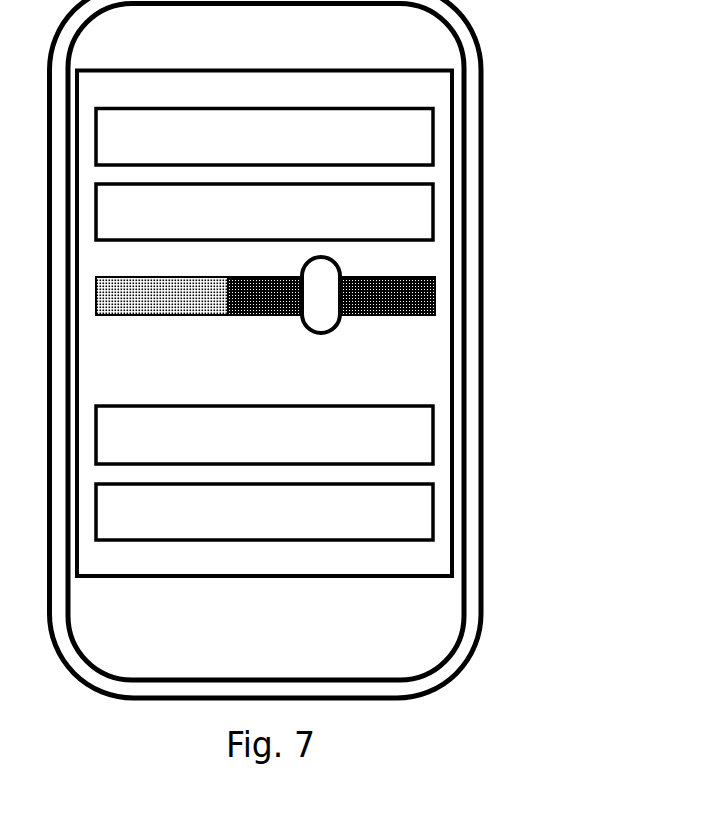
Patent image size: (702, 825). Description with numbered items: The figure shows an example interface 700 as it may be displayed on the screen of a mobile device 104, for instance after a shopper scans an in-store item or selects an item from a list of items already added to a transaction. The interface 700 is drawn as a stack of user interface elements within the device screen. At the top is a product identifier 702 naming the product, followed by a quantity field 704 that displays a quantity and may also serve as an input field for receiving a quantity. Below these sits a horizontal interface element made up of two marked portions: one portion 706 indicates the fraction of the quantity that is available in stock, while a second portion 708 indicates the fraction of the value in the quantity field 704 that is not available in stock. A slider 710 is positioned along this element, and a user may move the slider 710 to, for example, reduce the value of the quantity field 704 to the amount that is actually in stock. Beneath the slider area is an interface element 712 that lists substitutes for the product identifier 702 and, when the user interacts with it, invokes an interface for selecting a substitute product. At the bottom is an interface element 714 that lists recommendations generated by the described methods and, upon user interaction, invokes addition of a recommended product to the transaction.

The mobile device 104 is at (524, 75).
The interface 700 is at (455, 200).
The product identifier 702 is at (378, 150).
The quantity field 704 is at (333, 225).
The portion 706 is at (185, 317).
The second portion 708 is at (420, 317).
The slider 710 is at (322, 333).
The interface element 712 is at (383, 450).
The interface element 714 is at (392, 525).